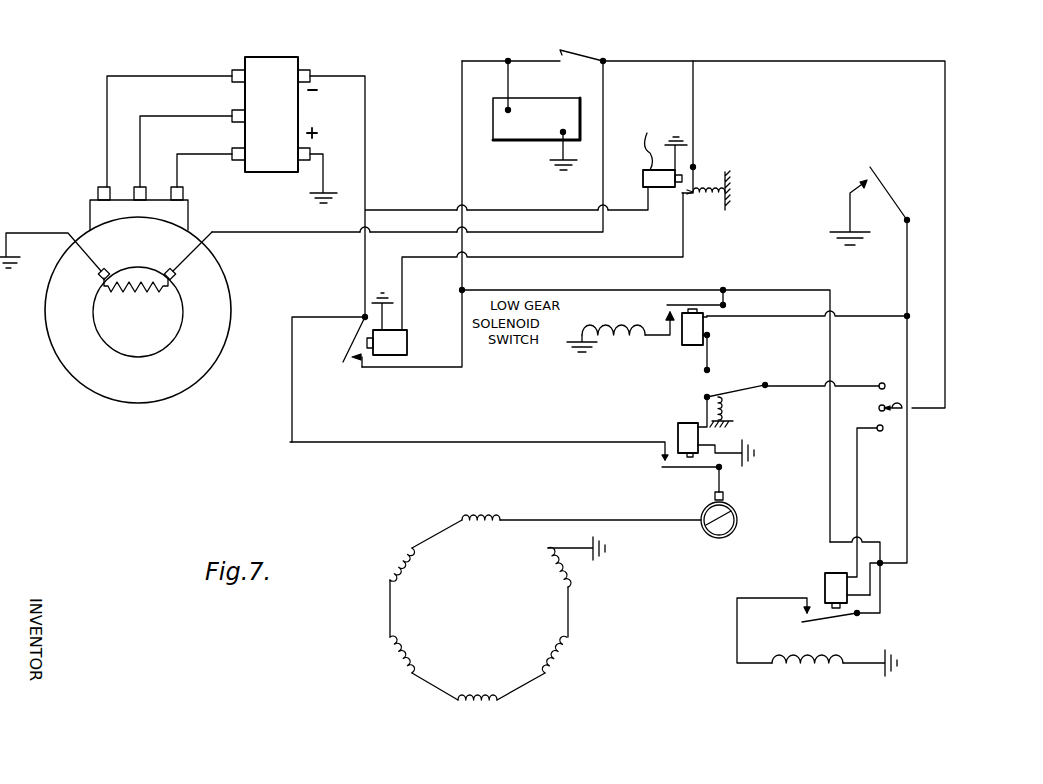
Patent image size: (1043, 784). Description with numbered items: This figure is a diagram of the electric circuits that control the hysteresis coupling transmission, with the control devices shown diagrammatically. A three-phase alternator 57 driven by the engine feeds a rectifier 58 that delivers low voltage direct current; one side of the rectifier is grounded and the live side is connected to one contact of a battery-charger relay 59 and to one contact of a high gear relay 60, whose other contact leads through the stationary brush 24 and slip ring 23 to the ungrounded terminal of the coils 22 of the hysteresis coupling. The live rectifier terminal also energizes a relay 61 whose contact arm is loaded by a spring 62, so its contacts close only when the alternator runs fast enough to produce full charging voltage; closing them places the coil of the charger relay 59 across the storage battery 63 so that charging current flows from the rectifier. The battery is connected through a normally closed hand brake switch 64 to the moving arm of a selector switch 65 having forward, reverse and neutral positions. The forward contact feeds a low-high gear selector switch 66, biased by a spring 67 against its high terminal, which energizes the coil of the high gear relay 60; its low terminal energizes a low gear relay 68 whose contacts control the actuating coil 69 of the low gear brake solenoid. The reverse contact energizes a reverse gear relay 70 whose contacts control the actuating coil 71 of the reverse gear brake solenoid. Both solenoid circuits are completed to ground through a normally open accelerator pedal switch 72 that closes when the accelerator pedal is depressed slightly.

The coils of the pole pieces 22 is at (465, 517).
The slip ring 23 is at (737, 510).
The stationary brush 24 is at (725, 495).
The three-phase alternator 57 is at (55, 325).
The rectifier 58 is at (288, 117).
The battery-charger relay 59 is at (352, 338).
The high gear relay 60 is at (660, 422).
The spring loaded relay 61 is at (667, 189).
The spring 62 is at (710, 187).
The storage battery 63 is at (543, 110).
The hand brake switch 64 is at (583, 59).
The selector switch 65 is at (892, 400).
The low-high gear selector switch 66 is at (708, 387).
The spring 67 is at (727, 410).
The low gear relay 68 is at (683, 333).
The actuating coil of the low gear brake solenoid 69 is at (609, 322).
The reverse gear relay 70 is at (815, 600).
The actuating coil of the reverse gear brake solenoid 71 is at (818, 662).
The accelerator pedal switch 72 is at (880, 187).